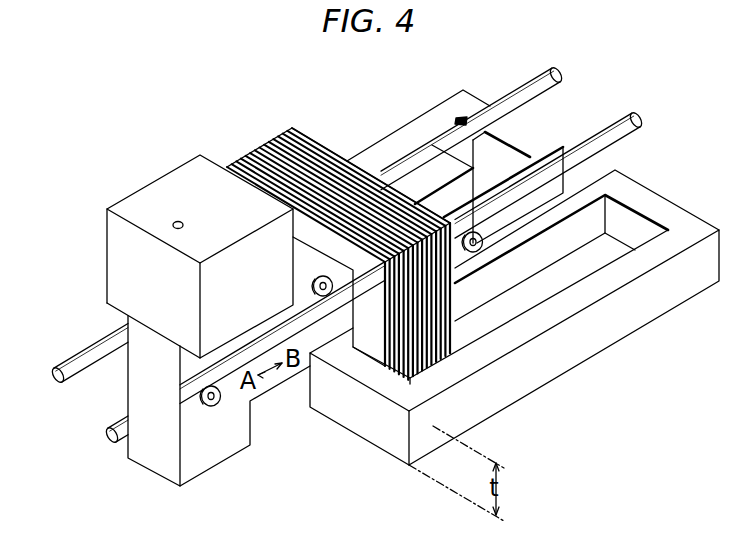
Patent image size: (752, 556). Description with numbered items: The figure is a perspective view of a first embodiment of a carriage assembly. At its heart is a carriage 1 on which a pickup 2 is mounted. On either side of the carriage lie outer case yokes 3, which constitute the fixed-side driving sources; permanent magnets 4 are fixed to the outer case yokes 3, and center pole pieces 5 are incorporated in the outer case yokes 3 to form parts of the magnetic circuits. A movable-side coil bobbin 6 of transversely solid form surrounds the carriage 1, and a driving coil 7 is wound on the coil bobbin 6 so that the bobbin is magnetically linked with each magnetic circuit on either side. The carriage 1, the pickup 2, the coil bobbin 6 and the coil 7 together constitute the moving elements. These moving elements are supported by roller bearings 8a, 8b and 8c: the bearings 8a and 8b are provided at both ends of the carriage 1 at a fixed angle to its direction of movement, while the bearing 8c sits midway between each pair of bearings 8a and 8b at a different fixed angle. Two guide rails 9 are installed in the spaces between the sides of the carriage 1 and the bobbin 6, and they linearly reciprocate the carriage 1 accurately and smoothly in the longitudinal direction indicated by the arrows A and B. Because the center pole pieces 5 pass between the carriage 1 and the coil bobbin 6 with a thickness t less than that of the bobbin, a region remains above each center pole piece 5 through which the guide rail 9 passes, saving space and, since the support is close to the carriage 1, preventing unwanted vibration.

The carriage 1 is at (213, 461).
The pickup 2 is at (143, 197).
The outer case yoke 3 is at (408, 131).
The permanent magnet 4 is at (469, 153).
The center pole piece 5 is at (529, 167).
The coil bobbin 6 is at (300, 128).
The driving coil 7 is at (262, 162).
The roller bearing 8a is at (211, 407).
The roller bearing 8b is at (486, 242).
The roller bearing 8c is at (307, 283).
The guide rail 9 is at (560, 73).